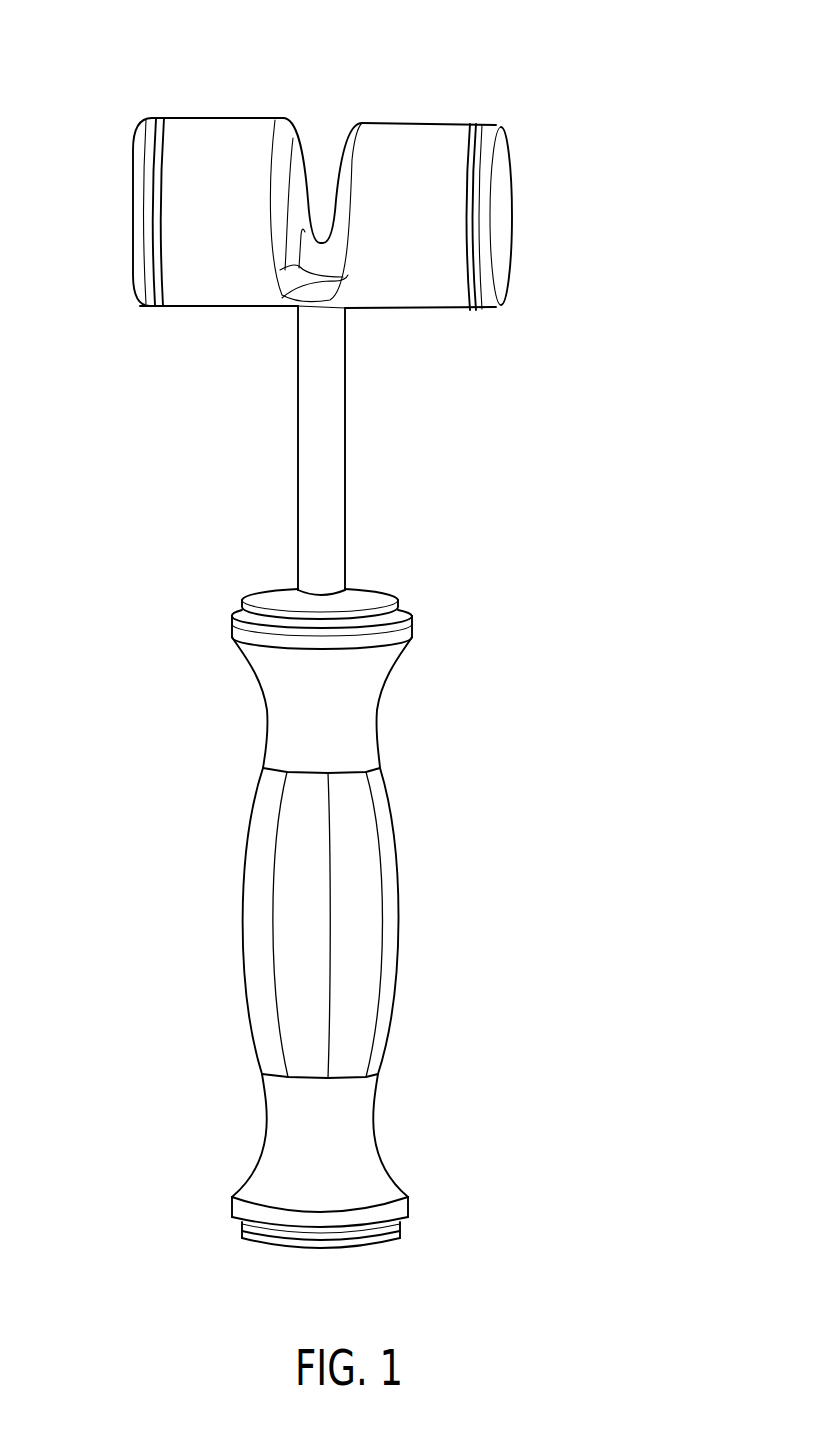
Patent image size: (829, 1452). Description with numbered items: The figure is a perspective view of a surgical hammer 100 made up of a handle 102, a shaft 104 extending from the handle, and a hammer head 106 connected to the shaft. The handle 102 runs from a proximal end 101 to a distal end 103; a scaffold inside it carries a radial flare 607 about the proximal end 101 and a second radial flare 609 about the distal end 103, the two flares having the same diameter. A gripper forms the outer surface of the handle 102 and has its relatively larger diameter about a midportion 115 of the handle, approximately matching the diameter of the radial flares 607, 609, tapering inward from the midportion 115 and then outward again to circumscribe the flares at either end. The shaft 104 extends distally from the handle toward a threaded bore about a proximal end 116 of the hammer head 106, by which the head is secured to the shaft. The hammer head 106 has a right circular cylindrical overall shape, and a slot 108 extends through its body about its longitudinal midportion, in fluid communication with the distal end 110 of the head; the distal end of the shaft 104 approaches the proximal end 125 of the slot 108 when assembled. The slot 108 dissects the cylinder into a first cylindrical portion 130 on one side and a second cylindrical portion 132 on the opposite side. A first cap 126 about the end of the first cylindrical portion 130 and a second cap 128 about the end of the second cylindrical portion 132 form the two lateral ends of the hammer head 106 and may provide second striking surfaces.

The surgical hammer 100 is at (362, 677).
The proximal end 101 is at (316, 1271).
The handle 102 is at (322, 923).
The distal end 103 is at (322, 919).
The shaft 104 is at (297, 440).
The hammer head 106 is at (362, 221).
The slot 108 is at (308, 223).
The distal end 110 is at (184, 198).
The midportion 115 is at (242, 908).
The proximal end 116 is at (363, 332).
The proximal end 125 is at (312, 260).
The first cap 126 is at (487, 126).
The second cap 128 is at (145, 306).
The first cylindrical portion 130 is at (447, 255).
The second cylindrical portion 132 is at (187, 220).
The radial flare 607 is at (258, 1248).
The second radial flare 609 is at (254, 590).